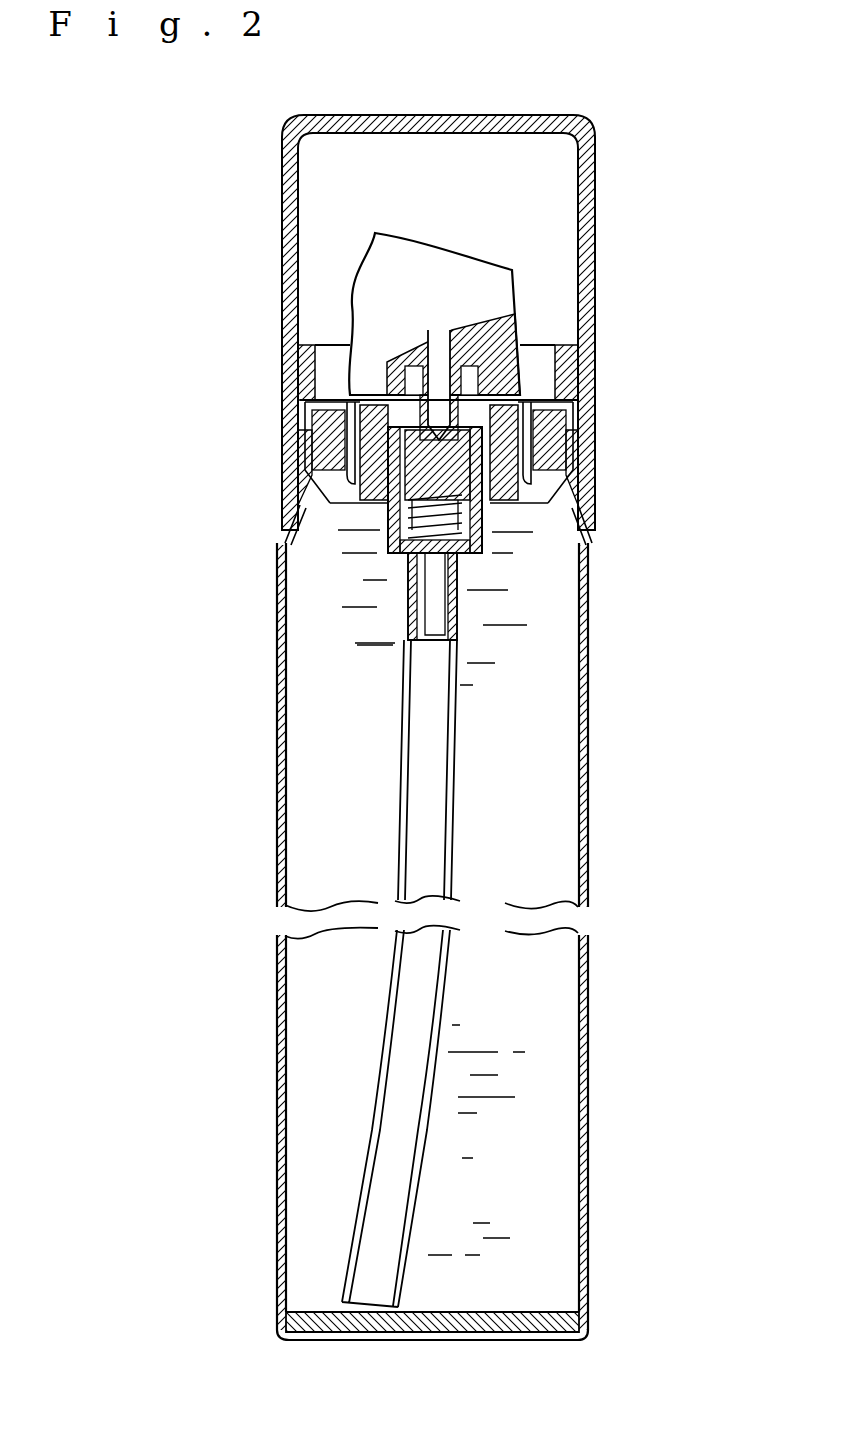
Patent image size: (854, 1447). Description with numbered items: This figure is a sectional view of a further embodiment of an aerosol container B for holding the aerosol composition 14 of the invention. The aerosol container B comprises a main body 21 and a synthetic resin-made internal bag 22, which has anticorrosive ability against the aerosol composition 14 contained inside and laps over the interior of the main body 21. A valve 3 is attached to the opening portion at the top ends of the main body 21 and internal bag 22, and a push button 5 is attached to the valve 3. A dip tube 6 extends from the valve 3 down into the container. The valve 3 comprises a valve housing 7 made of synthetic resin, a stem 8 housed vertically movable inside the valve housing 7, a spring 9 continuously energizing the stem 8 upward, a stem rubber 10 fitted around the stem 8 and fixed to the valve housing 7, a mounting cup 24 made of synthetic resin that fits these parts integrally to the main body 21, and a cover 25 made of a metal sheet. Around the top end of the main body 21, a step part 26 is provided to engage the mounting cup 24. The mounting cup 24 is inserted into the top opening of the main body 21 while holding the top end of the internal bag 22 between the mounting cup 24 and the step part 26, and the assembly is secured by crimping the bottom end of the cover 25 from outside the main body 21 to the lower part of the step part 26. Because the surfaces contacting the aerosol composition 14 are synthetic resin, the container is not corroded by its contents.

The aerosol container B is at (624, 328).
The push button 5 is at (516, 267).
The stem 8 is at (522, 330).
The cover 25 is at (594, 368).
The stem rubber 10 is at (283, 432).
The step part 26 is at (592, 440).
The spring 9 is at (590, 486).
The mounting cup 24 is at (280, 462).
The valve housing 7 is at (485, 515).
The valve 3 is at (490, 563).
The main body 21 is at (592, 710).
The internal bag 22 is at (589, 801).
The dip tube 6 is at (452, 887).
The aerosol composition 14 is at (512, 1157).